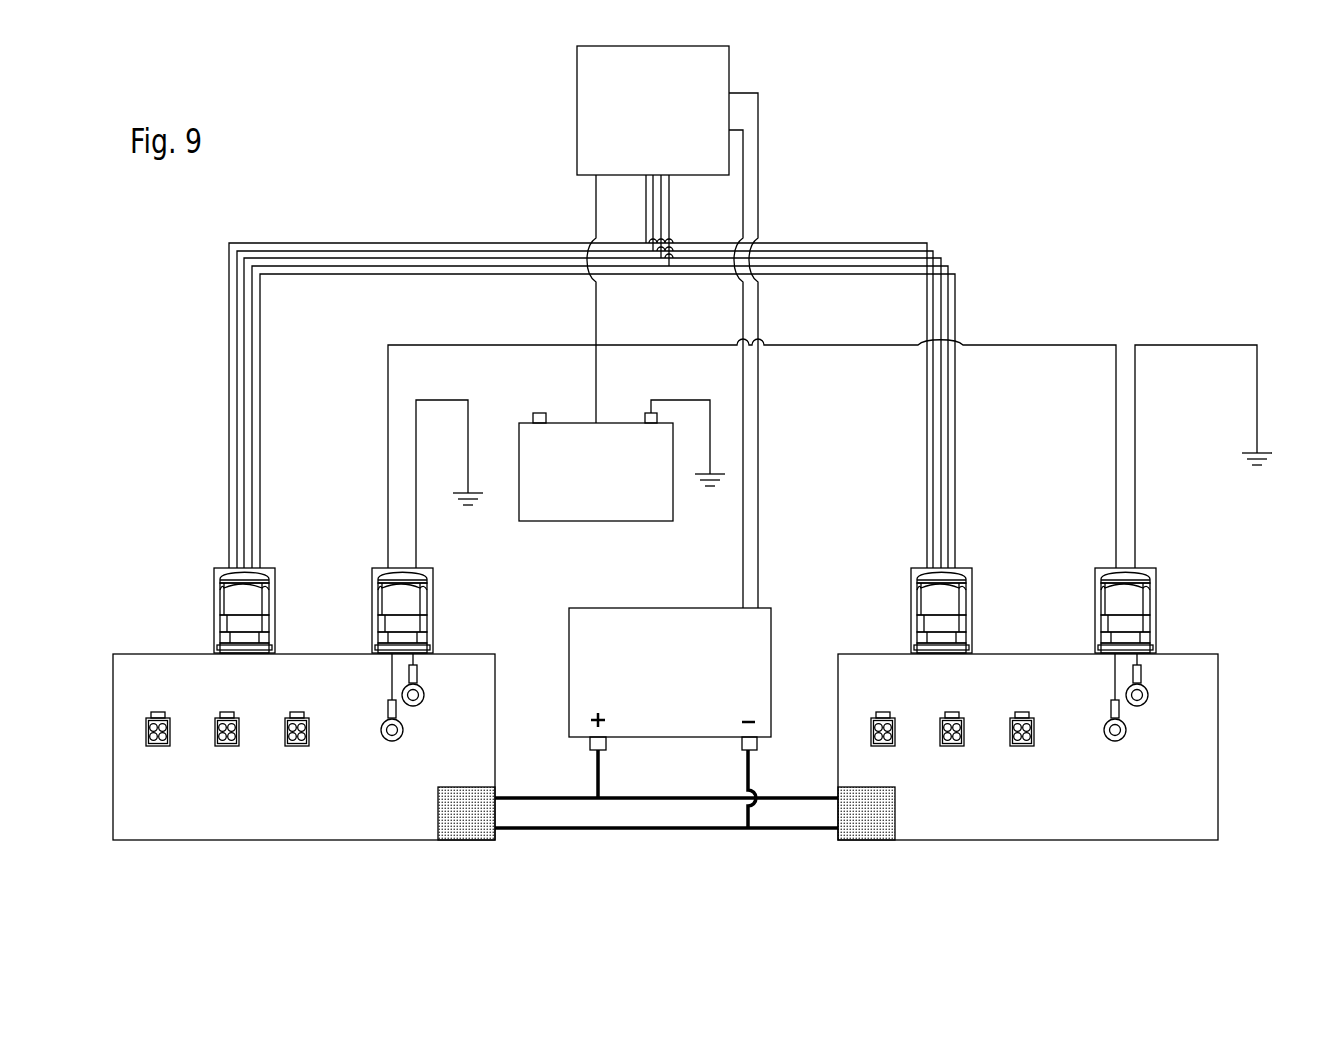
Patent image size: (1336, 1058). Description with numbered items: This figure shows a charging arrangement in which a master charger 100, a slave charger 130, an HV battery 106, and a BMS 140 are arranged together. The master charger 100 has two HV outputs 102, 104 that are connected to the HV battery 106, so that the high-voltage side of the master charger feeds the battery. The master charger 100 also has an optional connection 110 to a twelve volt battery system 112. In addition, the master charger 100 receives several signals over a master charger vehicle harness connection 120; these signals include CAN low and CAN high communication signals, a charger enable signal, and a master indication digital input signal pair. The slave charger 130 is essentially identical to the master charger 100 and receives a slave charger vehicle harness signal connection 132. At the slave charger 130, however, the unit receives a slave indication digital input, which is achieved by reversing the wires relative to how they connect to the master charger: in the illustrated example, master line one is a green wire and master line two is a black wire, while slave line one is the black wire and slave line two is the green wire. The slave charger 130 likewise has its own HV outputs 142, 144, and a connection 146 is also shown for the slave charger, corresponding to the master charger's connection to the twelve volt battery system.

The master charger 100 is at (165, 654).
The HV output 102 is at (560, 797).
The HV output 104 is at (578, 829).
The HV battery 106 is at (672, 608).
The connection 110 is at (372, 608).
The 12 volt battery system 112 is at (573, 423).
The master charger vehicle harness connection 120 is at (213, 608).
The slave charger 130 is at (1218, 752).
The slave charger vehicle harness signal connection 132 is at (974, 609).
The BMS 140 is at (577, 110).
The HV output 142 is at (770, 797).
The HV output 144 is at (777, 829).
The connection 146 is at (1158, 609).